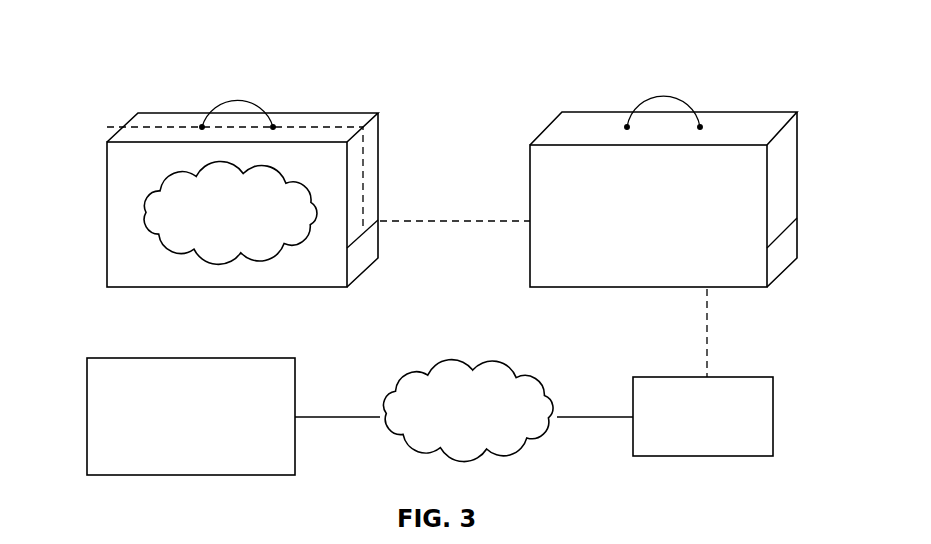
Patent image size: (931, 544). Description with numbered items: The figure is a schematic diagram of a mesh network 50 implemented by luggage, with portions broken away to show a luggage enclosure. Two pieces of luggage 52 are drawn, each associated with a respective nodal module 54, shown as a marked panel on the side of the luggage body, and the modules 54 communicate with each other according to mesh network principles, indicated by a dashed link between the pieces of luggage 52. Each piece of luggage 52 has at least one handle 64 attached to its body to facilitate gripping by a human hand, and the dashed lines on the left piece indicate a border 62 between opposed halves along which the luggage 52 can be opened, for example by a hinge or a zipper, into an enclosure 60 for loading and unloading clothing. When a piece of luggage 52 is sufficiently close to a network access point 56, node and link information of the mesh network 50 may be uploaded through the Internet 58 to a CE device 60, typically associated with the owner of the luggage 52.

The mesh network 50 is at (718, 74).
The luggage 52 is at (267, 182).
The nodal module 54 is at (353, 270).
The network access point 56 is at (745, 377).
The Internet 58 is at (518, 377).
The CE device 60 is at (177, 252).
The border 62 is at (338, 127).
The handle 64 is at (248, 98).